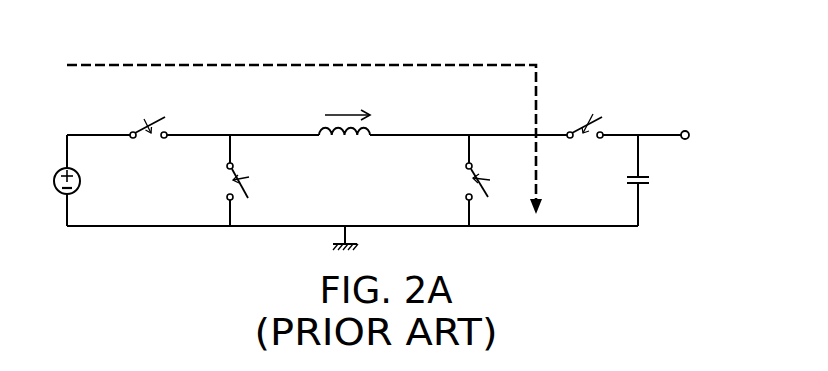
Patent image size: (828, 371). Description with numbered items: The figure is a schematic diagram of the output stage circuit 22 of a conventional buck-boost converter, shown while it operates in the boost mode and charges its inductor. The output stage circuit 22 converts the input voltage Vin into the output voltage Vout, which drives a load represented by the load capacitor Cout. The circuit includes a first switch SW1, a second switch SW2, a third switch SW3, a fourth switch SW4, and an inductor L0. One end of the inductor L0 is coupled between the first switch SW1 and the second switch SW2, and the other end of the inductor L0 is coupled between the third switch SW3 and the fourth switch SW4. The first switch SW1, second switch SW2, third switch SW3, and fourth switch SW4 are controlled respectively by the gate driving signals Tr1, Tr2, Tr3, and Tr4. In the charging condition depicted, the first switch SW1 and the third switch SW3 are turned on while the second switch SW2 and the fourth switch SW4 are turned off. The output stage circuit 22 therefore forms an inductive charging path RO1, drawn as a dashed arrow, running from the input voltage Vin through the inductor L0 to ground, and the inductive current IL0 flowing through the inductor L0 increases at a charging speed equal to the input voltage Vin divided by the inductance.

The output stage circuit 22 is at (77, 32).
The input voltage Vin is at (44, 182).
The output voltage Vout is at (712, 135).
The first switch SW1 is at (149, 143).
The second switch SW2 is at (210, 181).
The third switch SW3 is at (450, 181).
The fourth switch SW4 is at (588, 143).
The gate driving signal Tr1 is at (147, 109).
The gate driving signal Tr2 is at (264, 180).
The gate driving signal Tr3 is at (500, 182).
The gate driving signal Tr4 is at (585, 110).
The inductor L0 is at (344, 148).
The inductive current IL0 is at (347, 101).
The load capacitor Cout is at (665, 180).
The inductive charging path RO1 is at (304, 123).